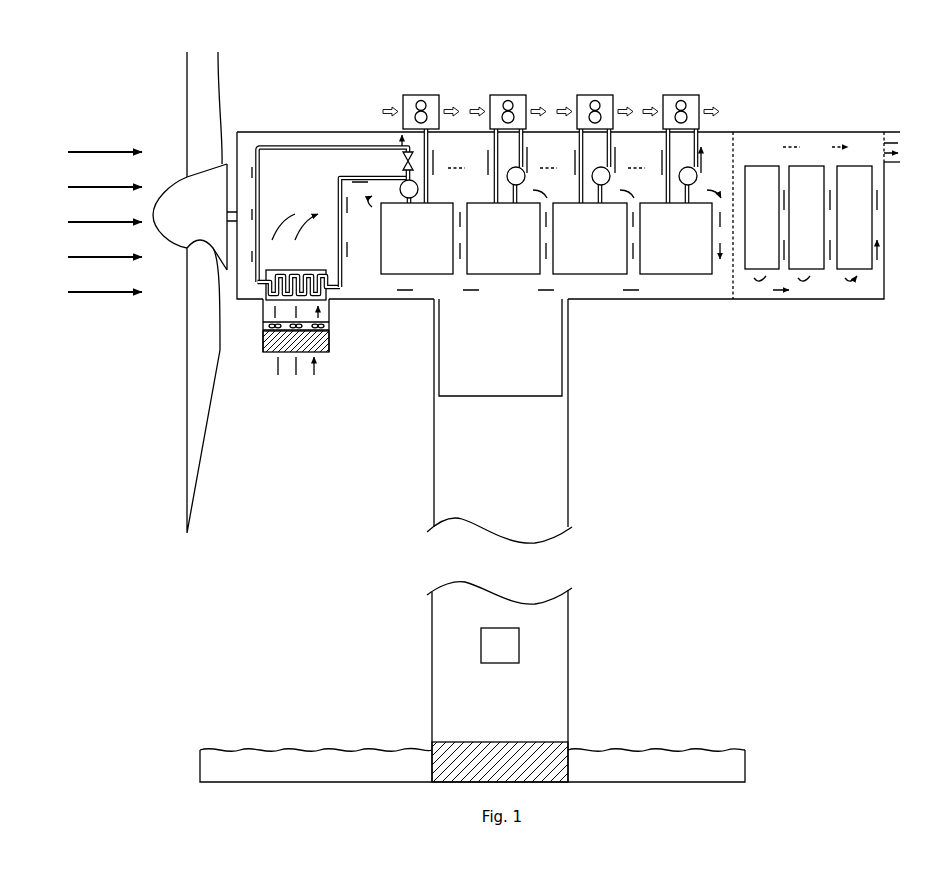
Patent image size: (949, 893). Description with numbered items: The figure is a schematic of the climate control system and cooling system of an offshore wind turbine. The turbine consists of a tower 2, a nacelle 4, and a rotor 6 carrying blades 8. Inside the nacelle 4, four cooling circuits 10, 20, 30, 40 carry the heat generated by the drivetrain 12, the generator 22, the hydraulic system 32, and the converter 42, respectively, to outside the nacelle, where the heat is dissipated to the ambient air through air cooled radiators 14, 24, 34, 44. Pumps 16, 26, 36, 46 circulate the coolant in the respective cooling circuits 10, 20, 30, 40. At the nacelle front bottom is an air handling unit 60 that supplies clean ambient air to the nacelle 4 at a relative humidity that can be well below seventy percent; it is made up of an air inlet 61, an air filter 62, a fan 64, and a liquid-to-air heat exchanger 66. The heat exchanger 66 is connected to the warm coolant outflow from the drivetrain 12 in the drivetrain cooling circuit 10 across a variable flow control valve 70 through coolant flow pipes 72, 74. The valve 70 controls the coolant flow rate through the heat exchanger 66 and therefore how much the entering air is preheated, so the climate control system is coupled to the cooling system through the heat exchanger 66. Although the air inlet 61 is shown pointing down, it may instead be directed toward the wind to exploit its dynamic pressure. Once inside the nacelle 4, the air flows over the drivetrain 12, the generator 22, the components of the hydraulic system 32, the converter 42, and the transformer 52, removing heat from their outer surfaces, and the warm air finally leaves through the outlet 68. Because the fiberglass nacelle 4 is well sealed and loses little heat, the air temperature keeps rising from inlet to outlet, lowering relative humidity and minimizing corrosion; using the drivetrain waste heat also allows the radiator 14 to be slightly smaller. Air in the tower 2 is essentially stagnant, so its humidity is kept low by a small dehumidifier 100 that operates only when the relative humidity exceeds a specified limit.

The tower 2 is at (472, 540).
The nacelle 4 is at (757, 131).
The rotor 6 is at (185, 205).
The blades 8 is at (200, 385).
The drivetrain cooling circuit 10 is at (411, 127).
The drivetrain 12 is at (408, 274).
The air cooled radiator 14 is at (404, 101).
The pump 16 is at (419, 189).
The generator cooling circuit 20 is at (506, 127).
The generator 22 is at (494, 274).
The air cooled radiator 24 is at (491, 101).
The pump 26 is at (524, 177).
The hydraulic system cooling circuit 30 is at (592, 127).
The hydraulic system 32 is at (580, 274).
The air cooled radiator 34 is at (578, 101).
The pump 36 is at (609, 177).
The converter cooling circuit 40 is at (675, 127).
The converter 42 is at (667, 274).
The air cooled radiator 44 is at (664, 101).
The pump 46 is at (694, 178).
The transformer 52 is at (858, 166).
The air handling unit 60 is at (316, 347).
The air inlet 61 is at (296, 376).
The air filter 62 is at (317, 345).
The fan 64 is at (336, 327).
The liquid-to-air heat exchanger 66 is at (308, 273).
The outlet 68 is at (905, 150).
The variable flow control valve 70 is at (403, 160).
The coolant flow pipe 72 is at (340, 207).
The coolant flow pipe 74 is at (262, 193).
The dehumidifier 100 is at (479, 641).